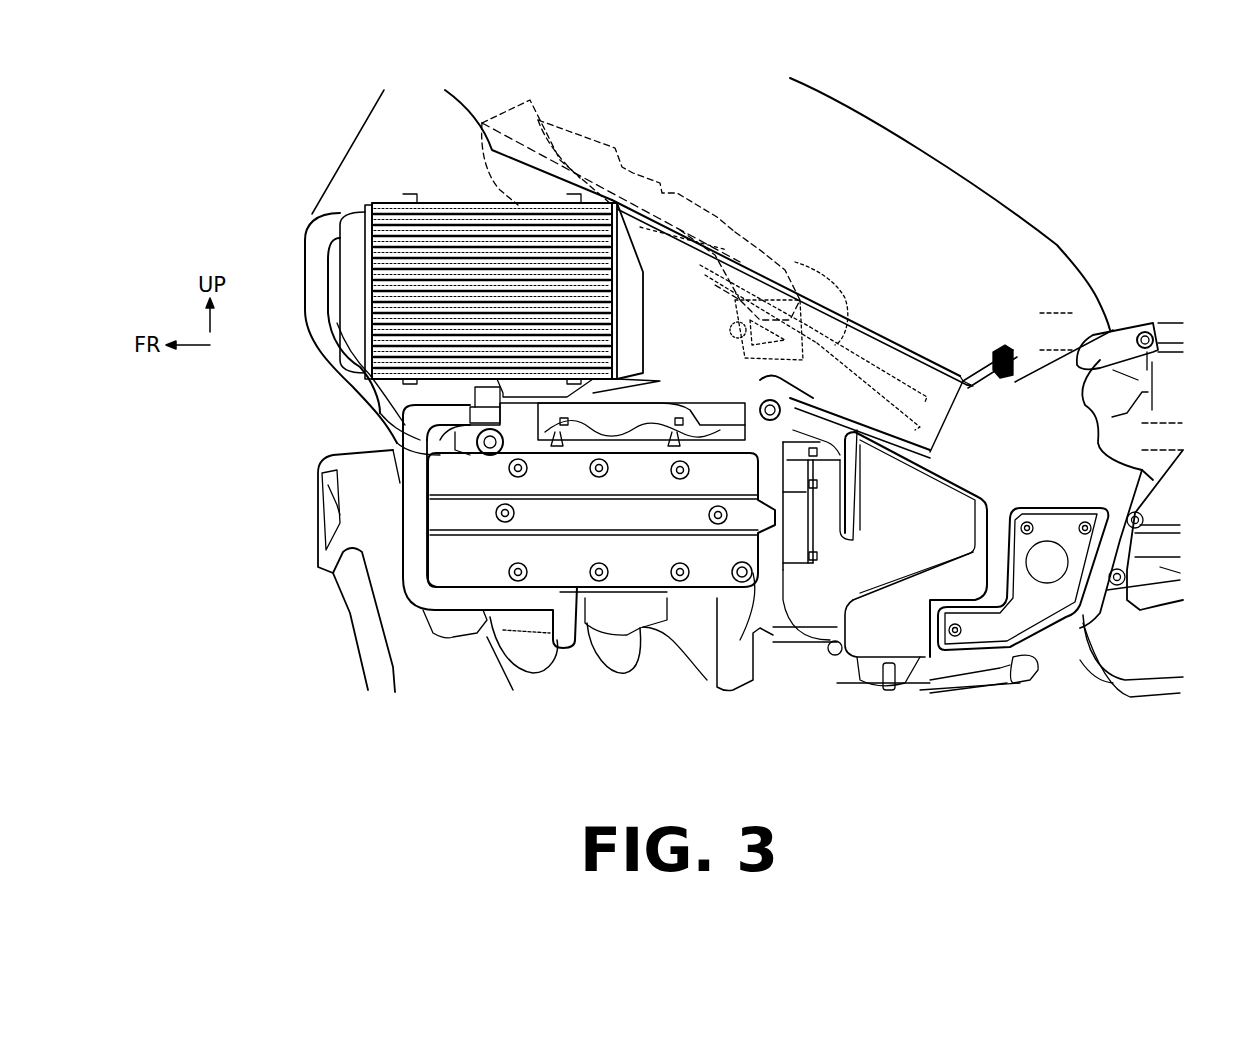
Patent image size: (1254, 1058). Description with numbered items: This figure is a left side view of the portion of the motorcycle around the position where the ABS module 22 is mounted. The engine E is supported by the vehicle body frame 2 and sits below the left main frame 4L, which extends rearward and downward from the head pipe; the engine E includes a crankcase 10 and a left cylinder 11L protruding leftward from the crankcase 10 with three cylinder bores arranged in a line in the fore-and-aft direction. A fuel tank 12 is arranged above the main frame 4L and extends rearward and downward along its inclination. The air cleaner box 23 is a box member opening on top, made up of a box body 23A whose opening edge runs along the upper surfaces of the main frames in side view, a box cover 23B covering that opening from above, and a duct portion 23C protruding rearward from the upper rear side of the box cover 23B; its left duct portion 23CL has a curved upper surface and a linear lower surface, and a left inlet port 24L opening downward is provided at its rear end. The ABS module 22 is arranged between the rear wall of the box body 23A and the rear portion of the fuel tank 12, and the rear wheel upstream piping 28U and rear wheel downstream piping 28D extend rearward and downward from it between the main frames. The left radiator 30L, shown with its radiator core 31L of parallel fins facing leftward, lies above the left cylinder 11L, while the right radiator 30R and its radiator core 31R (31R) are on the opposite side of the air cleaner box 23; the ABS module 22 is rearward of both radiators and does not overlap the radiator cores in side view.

The vehicle body frame 2 is at (868, 324).
The left main frame 4L is at (840, 322).
The crankcase 10 is at (827, 523).
The left cylinder 11L is at (642, 570).
The fuel tank 12 is at (1057, 243).
The ABS module 22 is at (795, 262).
The air cleaner box 23 is at (740, 60).
The box body 23A is at (507, 200).
The box cover 23B is at (625, 160).
The duct portion 23C is at (685, 194).
The left duct portion 23CL is at (735, 205).
The left inlet port 24L is at (776, 313).
The rear wheel upstream piping 28U is at (893, 347).
The rear wheel downstream piping 28D is at (893, 430).
The left radiator 30L is at (456, 243).
The right radiator 30R is at (431, 197).
The radiator core 31L is at (324, 343).
The radiator core 31R is at (397, 308).
The engine E is at (790, 745).